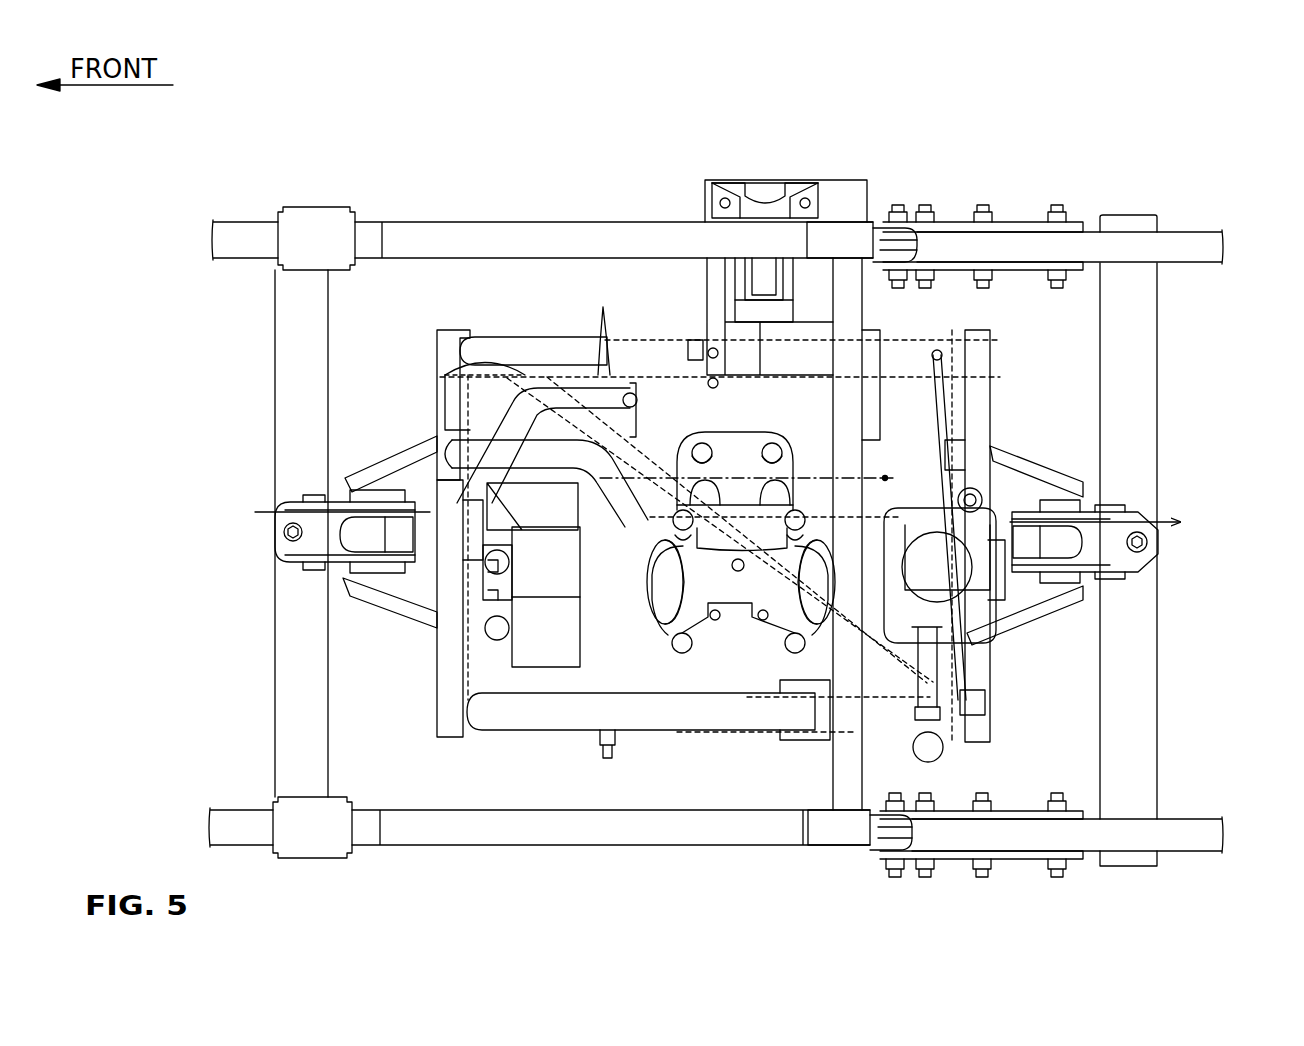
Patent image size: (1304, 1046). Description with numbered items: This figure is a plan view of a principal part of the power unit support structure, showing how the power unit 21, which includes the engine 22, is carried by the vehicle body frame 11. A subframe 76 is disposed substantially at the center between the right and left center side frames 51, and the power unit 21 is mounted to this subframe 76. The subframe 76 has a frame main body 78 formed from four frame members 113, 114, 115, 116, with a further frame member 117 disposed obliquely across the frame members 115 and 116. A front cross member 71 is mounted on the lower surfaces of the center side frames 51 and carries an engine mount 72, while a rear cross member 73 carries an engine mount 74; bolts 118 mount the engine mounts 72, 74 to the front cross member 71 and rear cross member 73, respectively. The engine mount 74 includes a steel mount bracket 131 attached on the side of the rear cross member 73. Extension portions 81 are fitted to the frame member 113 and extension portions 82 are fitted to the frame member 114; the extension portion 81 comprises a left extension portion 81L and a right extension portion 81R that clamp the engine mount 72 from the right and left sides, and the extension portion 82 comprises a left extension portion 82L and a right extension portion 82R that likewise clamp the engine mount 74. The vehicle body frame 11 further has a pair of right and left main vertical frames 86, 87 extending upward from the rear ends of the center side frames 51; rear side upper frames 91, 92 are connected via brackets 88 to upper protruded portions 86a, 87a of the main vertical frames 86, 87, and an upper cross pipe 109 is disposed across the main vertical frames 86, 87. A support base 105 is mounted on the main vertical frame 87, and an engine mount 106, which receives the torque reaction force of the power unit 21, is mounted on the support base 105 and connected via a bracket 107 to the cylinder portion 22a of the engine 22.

The vehicle body frame 11 is at (422, 215).
The power unit 21 is at (537, 655).
The engine 22 is at (660, 645).
The cylinder portion 22a is at (705, 640).
The center side frame 51 is at (560, 222).
The front cross member 71 is at (283, 730).
The engine mount 72 is at (280, 548).
The rear cross member 73 is at (1140, 705).
The engine mount 74 is at (1153, 558).
The subframe 76 is at (498, 332).
The frame main body 78 is at (437, 353).
The extension portion 81 is at (345, 470).
The right extension portion 81R is at (400, 457).
The left extension portion 81L is at (382, 600).
The extension portion 82 is at (1090, 470).
The right extension portion 82R is at (1040, 455).
The left extension portion 82L is at (1060, 590).
The main vertical frame 86 is at (822, 840).
The upper protruded portion 86a is at (888, 835).
The main vertical frame 87 is at (840, 230).
The upper protruded portion 87a is at (887, 230).
The bracket 88 is at (963, 230).
The rear side upper frame 91 is at (1180, 845).
The rear side upper frame 92 is at (1197, 237).
The support base 105 is at (863, 190).
The engine mount 106 is at (760, 277).
The bracket 107 is at (733, 330).
The upper cross pipe 109 is at (832, 785).
The frame member 113 is at (440, 697).
The frame member 114 is at (985, 700).
The frame member 115 is at (543, 342).
The frame member 116 is at (545, 735).
The frame member 117 is at (746, 590).
The bolts 118 is at (280, 528).
The mount bracket 131 is at (313, 543).